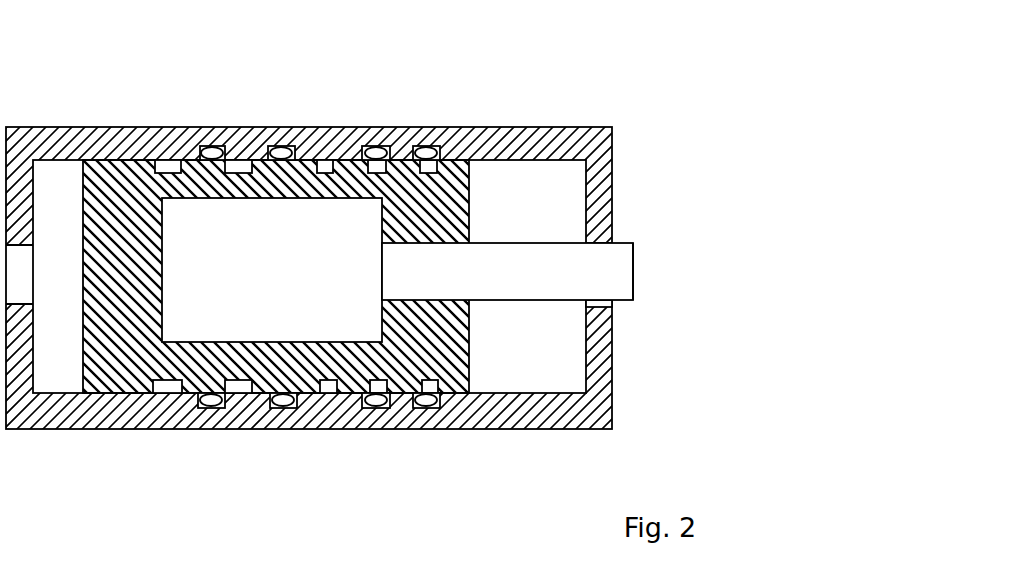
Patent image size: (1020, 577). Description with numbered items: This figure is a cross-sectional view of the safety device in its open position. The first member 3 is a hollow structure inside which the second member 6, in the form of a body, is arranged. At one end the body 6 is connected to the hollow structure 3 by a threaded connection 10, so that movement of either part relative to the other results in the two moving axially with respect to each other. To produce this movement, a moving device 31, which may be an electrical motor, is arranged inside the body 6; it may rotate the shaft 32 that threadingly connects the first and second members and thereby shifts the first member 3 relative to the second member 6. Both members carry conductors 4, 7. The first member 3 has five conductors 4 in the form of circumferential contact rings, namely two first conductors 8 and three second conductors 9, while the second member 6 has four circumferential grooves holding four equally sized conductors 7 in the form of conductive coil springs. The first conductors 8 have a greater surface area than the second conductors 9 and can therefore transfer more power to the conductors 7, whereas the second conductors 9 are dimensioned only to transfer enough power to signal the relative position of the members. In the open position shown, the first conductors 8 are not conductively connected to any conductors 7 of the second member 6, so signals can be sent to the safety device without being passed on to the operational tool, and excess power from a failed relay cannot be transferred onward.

The first member 3 is at (118, 198).
The conductors 4 is at (430, 390).
The second member 6 is at (550, 143).
The conductors 7 is at (445, 150).
The first conductors 8 is at (250, 383).
The second conductors 9 is at (437, 395).
The threaded connection 10 is at (613, 243).
The moving device 31 is at (374, 315).
The shaft 32 is at (628, 268).